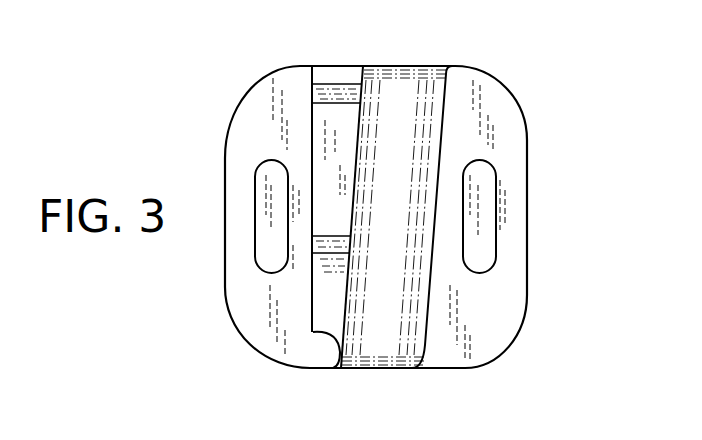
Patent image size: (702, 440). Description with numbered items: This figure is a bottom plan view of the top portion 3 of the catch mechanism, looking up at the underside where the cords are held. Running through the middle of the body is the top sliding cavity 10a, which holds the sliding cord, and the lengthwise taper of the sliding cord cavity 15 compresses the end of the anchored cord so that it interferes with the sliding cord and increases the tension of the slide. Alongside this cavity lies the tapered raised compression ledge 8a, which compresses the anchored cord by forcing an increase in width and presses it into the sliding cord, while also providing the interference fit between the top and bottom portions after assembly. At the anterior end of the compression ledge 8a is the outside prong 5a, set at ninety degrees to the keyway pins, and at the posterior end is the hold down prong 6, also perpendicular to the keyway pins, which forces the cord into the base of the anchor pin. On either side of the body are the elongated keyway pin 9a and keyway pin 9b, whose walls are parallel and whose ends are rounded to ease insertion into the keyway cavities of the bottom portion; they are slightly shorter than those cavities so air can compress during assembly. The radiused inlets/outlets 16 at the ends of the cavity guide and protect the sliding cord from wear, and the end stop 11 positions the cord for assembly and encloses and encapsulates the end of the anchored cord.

The blade holder 3 is at (545, 112).
The outside prong 5a is at (349, 80).
The hold down prong 6 is at (333, 267).
The raised compression ledge 8a is at (337, 150).
The elongated keyway pin 9a is at (265, 198).
The keyway pin 9b is at (485, 215).
The top sliding cavity 10a is at (398, 106).
The end stop 11 is at (327, 348).
The sliding cord cavity 15 is at (395, 257).
The radiused inlets/outlets 16 is at (415, 73).